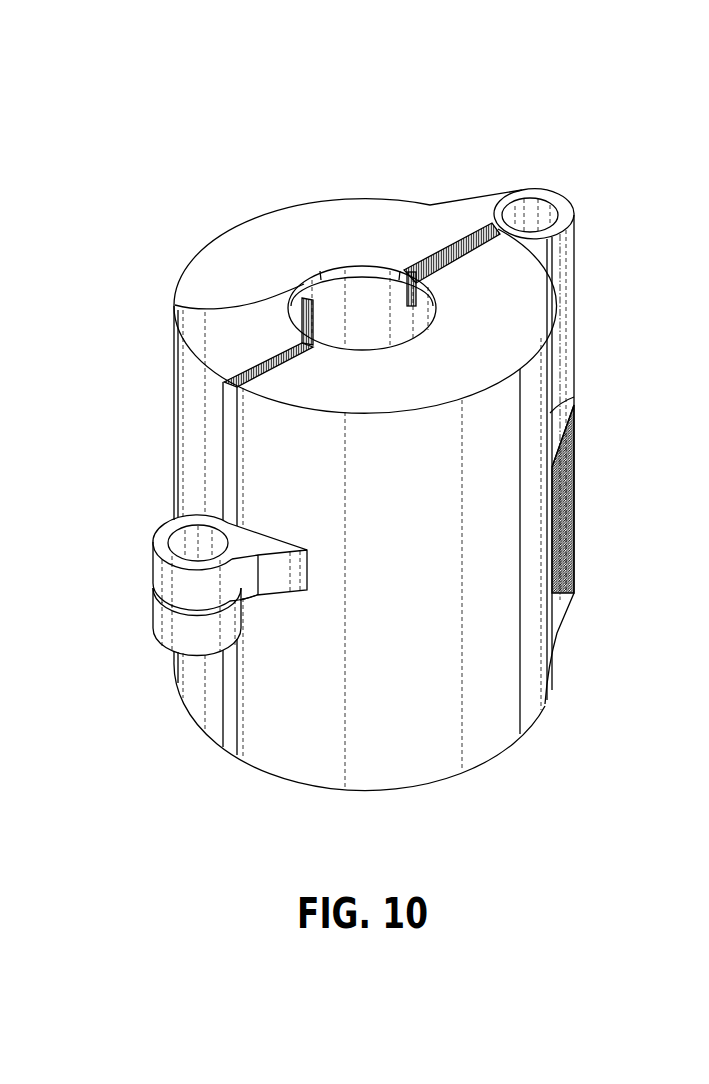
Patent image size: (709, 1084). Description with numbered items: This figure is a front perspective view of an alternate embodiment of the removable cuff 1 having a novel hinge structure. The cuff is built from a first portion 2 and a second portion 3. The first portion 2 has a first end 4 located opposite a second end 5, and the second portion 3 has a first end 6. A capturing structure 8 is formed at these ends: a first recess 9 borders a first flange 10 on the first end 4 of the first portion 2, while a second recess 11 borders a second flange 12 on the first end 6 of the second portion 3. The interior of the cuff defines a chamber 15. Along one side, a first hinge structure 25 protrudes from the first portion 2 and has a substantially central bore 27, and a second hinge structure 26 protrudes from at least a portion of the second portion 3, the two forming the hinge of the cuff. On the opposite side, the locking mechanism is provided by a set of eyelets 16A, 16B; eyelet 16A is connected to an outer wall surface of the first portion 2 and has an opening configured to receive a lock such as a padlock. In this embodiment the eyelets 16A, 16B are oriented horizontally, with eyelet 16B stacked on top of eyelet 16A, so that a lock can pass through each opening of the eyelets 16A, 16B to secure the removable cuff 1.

The removable cuff 1 is at (130, 146).
The first portion 2 is at (205, 401).
The second portion 3 is at (417, 748).
The first end 4 is at (270, 229).
The second end 5 is at (190, 726).
The first end 6 is at (527, 328).
The capturing structure 8 is at (351, 270).
The first recess 9 is at (305, 286).
The first flange 10 is at (175, 305).
The second recess 11 is at (412, 340).
The second flange 12 is at (508, 301).
The chamber 15 is at (367, 300).
The eyelet 16A is at (158, 622).
The eyelet 16B is at (158, 572).
The first hinge structure 25 is at (571, 246).
The second hinge structure 26 is at (568, 503).
The central bore 27 is at (531, 211).